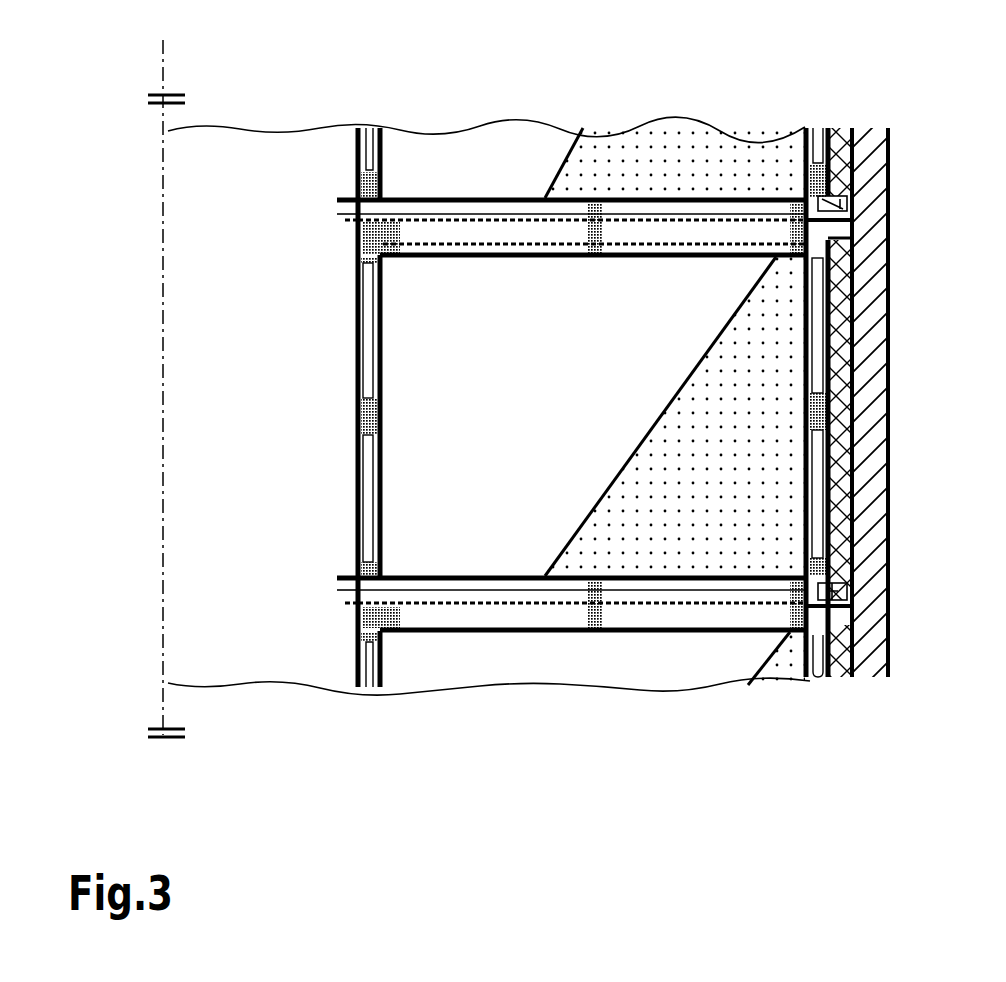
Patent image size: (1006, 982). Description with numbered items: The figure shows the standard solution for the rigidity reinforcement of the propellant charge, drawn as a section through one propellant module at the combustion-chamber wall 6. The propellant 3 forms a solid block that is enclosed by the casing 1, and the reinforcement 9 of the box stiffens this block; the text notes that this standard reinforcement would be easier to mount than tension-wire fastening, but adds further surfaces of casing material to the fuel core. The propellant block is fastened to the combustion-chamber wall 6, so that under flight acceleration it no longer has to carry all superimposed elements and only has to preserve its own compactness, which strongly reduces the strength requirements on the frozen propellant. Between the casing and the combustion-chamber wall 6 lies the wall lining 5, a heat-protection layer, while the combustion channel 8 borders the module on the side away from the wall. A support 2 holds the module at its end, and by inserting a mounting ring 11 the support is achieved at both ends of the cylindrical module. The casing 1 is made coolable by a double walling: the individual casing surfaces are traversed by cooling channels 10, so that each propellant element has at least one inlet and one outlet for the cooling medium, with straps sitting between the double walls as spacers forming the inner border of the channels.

The casing 1 is at (385, 155).
The support 2 is at (337, 222).
The propellant 3 is at (582, 413).
The wall lining/heat-protection layer 5 is at (845, 677).
The combustion-chamber wall 6 is at (873, 665).
The combustion channel 8 is at (498, 406).
The reinforcement 9 is at (675, 416).
The cooling channels/duct system 10 is at (357, 350).
The mounting ring 11 is at (832, 205).